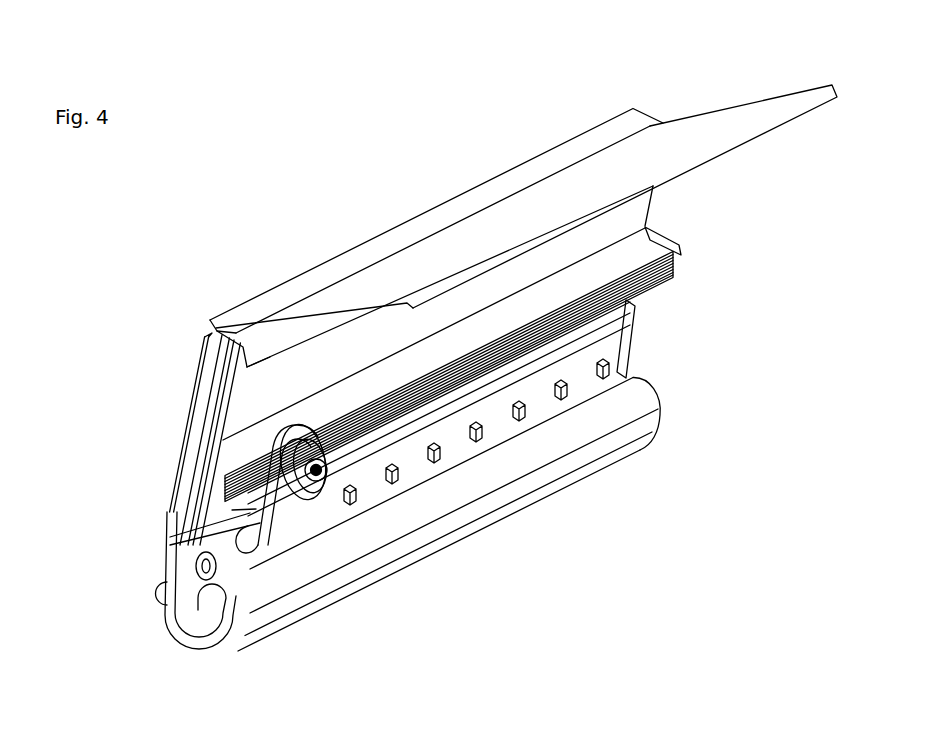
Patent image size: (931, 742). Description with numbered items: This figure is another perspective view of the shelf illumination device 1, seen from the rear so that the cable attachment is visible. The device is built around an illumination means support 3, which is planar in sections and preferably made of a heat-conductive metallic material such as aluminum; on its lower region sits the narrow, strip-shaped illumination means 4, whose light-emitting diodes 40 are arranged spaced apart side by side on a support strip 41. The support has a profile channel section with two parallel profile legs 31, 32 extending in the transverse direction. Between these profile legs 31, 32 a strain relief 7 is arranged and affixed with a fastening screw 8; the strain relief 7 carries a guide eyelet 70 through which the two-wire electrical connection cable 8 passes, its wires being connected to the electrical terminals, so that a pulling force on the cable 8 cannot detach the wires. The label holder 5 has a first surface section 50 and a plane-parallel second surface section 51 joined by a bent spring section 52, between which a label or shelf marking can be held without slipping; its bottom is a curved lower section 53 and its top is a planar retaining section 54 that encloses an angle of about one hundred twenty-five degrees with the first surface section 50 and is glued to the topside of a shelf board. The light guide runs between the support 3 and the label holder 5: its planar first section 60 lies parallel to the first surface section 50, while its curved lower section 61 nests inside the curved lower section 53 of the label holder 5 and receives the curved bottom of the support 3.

The shelf illumination device 1 is at (176, 449).
The illumination means support 3 is at (228, 385).
The illumination means 4 is at (627, 355).
The label holder 5 is at (718, 104).
The strain relief 7 is at (283, 513).
The electrical connection cable 8 is at (173, 530).
The profile leg 31 is at (674, 283).
The profile leg 32 is at (648, 238).
The light-emitting diodes 40 is at (478, 438).
The support strip 41 is at (532, 398).
The first surface section 50 is at (196, 455).
The second surface section 51 is at (205, 412).
The spring section 52 is at (152, 590).
The lower section of the label holder 53 is at (200, 652).
The retaining section 54 is at (697, 130).
The first section of the light guide 60 is at (191, 500).
The lower section of the light guide 61 is at (176, 630).
The guide eyelet 70 is at (250, 535).